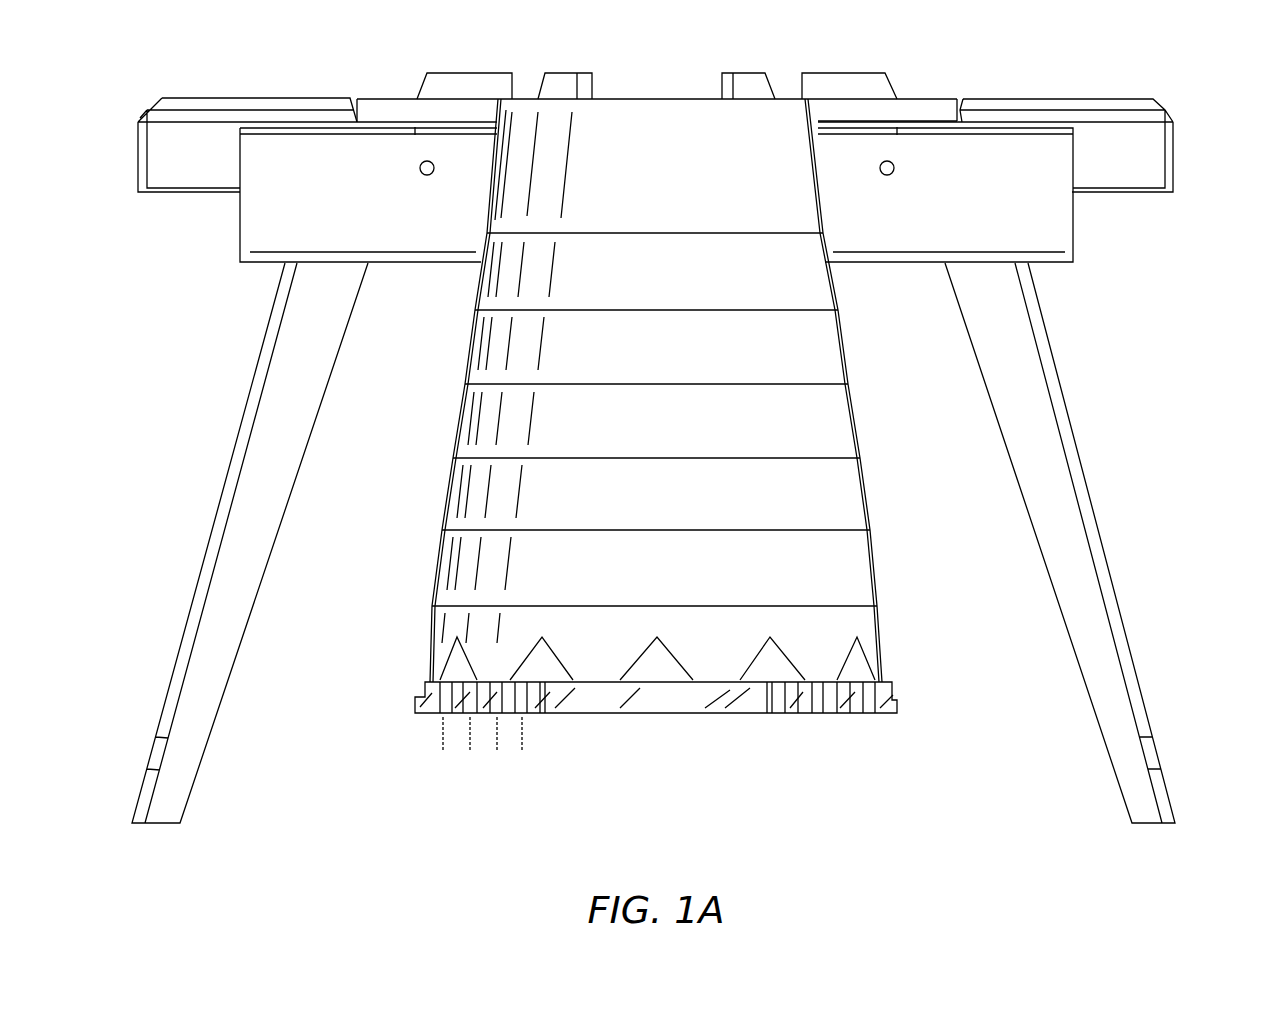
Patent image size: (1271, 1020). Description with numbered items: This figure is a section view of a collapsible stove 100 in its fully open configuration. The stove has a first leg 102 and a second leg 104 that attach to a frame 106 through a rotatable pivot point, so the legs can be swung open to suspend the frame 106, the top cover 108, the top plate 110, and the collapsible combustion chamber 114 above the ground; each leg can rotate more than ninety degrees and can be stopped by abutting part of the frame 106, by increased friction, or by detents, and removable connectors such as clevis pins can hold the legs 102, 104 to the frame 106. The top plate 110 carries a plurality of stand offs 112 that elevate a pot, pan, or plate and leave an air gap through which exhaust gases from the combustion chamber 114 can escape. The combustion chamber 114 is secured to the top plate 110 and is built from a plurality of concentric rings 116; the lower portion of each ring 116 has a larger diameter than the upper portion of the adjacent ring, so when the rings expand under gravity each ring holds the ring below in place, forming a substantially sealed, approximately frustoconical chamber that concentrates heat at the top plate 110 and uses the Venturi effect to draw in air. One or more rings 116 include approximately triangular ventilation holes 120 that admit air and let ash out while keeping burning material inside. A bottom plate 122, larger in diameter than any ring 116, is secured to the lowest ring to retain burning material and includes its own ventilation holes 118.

The collapsible stove 100 is at (270, 23).
The first leg 102 is at (200, 565).
The second leg 104 is at (1126, 629).
The frame 106 is at (1073, 223).
The top cover 108 is at (1058, 99).
The top plate 110 is at (928, 99).
The stand offs 112 is at (852, 72).
The collapsible combustion chamber 114 is at (643, 175).
The concentric rings 116 is at (786, 175).
The ventilation holes 118 is at (482, 747).
The ventilation holes 120 is at (657, 667).
The bottom plate 122 is at (895, 702).